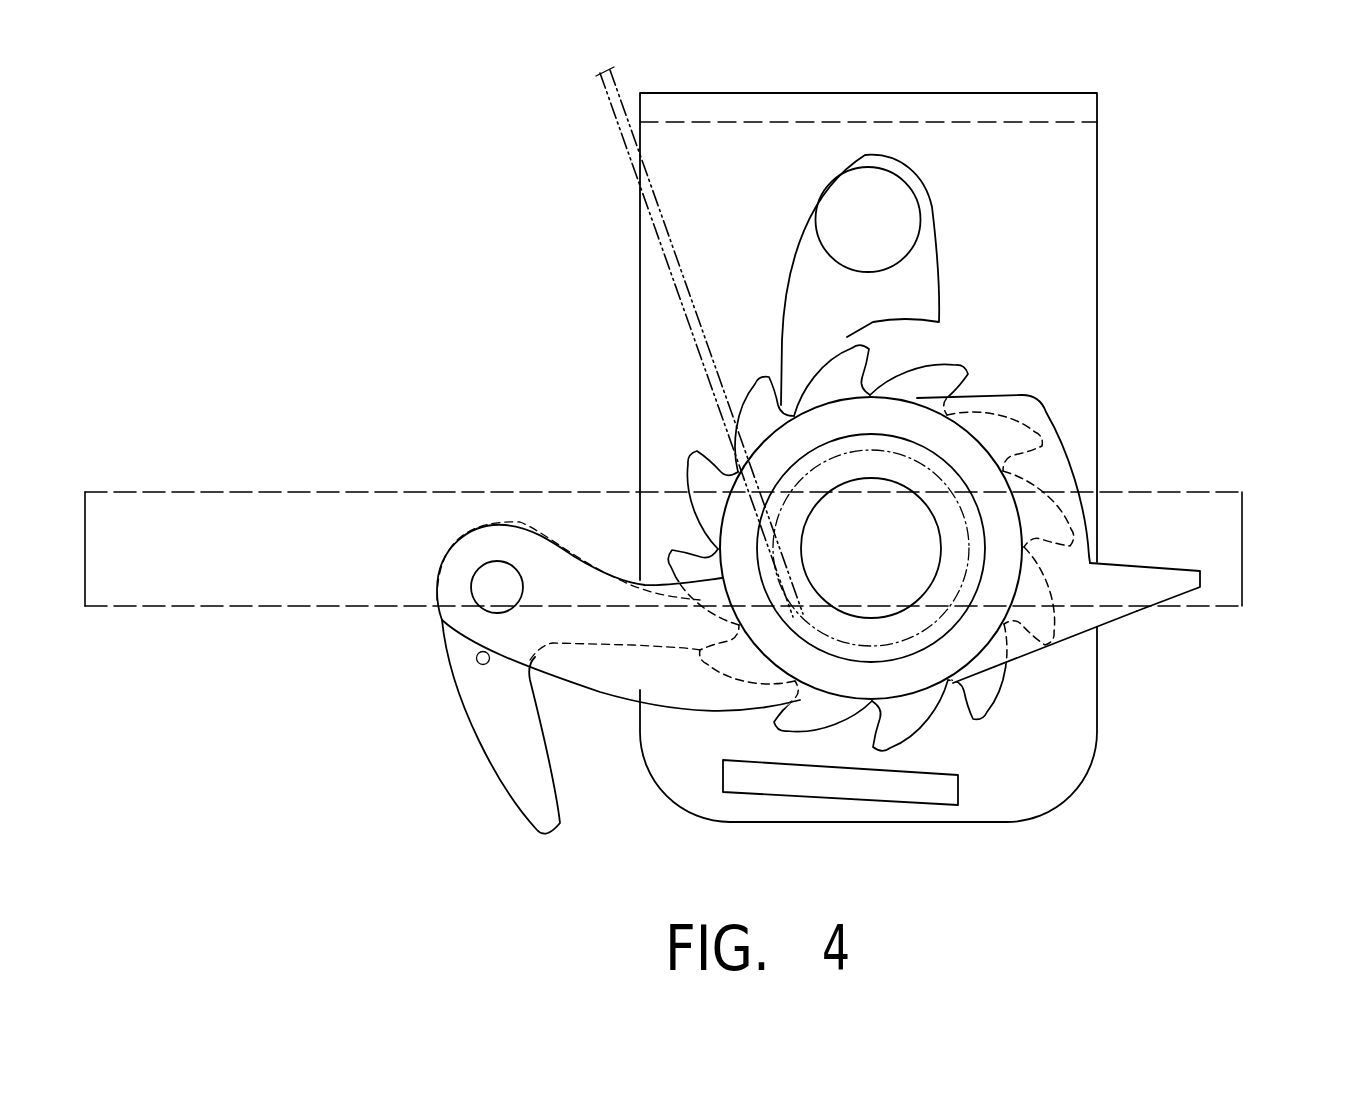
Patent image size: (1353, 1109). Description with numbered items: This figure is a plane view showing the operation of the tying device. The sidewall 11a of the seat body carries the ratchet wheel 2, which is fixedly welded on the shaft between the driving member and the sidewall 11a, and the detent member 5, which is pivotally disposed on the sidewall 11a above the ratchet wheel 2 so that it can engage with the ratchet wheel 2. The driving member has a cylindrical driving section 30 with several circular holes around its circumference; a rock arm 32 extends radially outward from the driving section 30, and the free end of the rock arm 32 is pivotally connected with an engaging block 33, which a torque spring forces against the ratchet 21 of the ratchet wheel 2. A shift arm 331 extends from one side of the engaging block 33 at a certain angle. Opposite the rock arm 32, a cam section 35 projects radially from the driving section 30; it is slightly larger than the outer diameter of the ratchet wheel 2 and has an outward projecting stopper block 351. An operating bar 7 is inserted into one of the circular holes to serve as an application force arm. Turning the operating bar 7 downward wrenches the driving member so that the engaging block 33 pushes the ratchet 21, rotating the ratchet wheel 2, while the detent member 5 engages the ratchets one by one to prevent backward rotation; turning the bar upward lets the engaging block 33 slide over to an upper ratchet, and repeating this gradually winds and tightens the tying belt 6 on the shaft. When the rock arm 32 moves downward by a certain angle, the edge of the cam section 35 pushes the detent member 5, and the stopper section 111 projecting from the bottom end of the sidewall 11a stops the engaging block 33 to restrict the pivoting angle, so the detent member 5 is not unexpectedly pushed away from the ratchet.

The sidewall 11a is at (1077, 187).
The stopper section 111 is at (932, 788).
The detent member 5 is at (918, 270).
The ratchet wheel 2 is at (910, 523).
The ratchet 21 is at (943, 397).
The driving section 30 is at (968, 630).
The cam section 35 is at (1125, 526).
The stopper block 351 is at (1170, 576).
The engaging block 33 is at (576, 635).
The rock arm 32 is at (597, 668).
The shift arm 331 is at (505, 741).
The tying belt 6 is at (620, 137).
The operating bar 7 is at (233, 493).